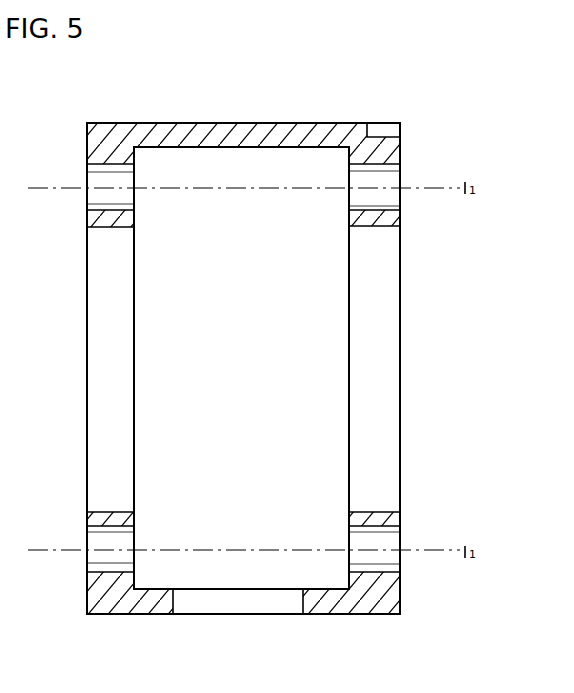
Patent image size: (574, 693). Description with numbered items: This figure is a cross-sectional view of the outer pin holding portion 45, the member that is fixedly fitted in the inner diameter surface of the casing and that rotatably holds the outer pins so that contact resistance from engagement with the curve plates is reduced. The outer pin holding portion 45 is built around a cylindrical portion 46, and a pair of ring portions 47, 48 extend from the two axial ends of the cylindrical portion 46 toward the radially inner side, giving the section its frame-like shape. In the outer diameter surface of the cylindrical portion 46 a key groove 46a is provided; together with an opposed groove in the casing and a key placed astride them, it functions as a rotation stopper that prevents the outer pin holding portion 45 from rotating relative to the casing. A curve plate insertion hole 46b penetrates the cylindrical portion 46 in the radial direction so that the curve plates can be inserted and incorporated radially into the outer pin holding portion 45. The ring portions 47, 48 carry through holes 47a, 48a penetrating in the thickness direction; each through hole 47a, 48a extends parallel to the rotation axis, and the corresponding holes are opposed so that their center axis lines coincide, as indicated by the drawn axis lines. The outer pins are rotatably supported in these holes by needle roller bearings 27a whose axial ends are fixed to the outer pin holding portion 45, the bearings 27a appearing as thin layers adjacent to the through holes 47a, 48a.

The outer pin holding portion 45 is at (427, 131).
The cylindrical portion 46 is at (238, 135).
The key groove 46a is at (384, 130).
The curve plate insertion hole 46b is at (233, 614).
The ring portion 47 is at (381, 158).
The through hole 47a is at (386, 198).
The ring portion 48 is at (105, 153).
The through hole 48a is at (100, 198).
The needle roller bearing 27a is at (402, 169).